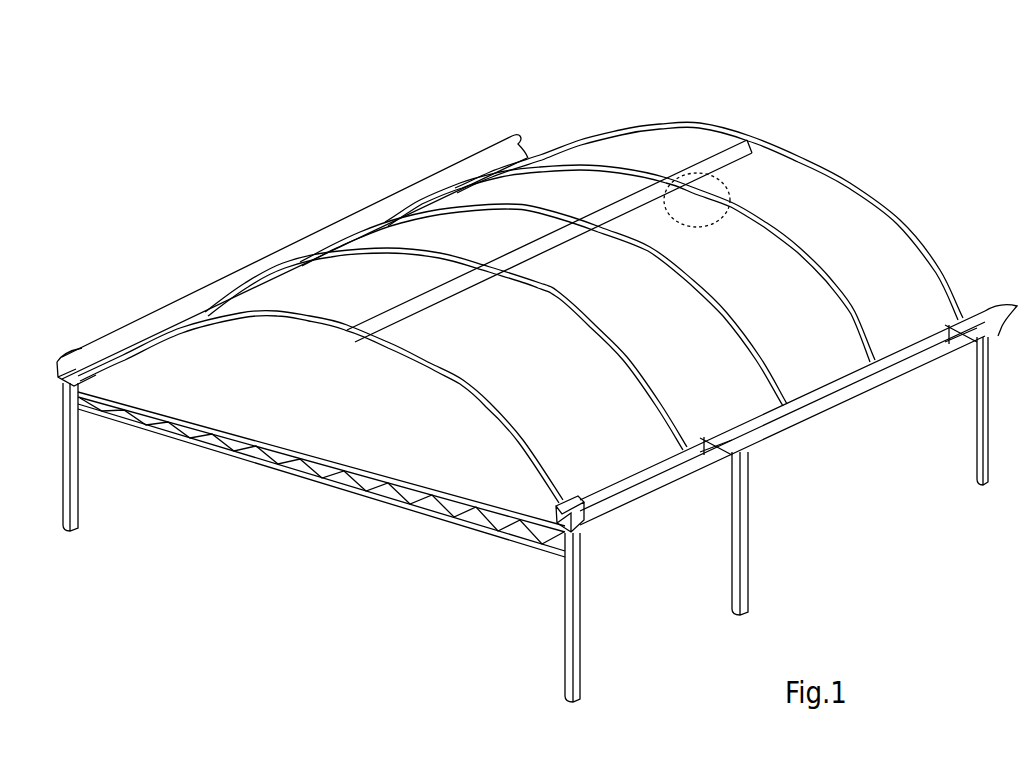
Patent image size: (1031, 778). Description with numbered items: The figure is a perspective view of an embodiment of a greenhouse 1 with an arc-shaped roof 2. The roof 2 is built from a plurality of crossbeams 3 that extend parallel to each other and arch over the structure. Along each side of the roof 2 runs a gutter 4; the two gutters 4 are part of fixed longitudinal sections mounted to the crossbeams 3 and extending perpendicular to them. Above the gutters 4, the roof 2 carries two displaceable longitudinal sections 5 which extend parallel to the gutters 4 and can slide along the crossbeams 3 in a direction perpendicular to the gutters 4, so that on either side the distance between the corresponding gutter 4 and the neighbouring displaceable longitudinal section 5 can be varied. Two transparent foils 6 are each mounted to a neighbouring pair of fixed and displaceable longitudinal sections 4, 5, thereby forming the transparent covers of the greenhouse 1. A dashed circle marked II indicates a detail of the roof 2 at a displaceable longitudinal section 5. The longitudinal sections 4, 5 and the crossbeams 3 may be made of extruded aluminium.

The greenhouse 1 is at (925, 92).
The arc-shaped roof 2 is at (633, 152).
The crossbeams 3 is at (830, 273).
The gutters 4 is at (363, 215).
The displaceable longitudinal sections 5 is at (747, 148).
The transparent foils 6 is at (493, 192).
The detail II is at (730, 197).